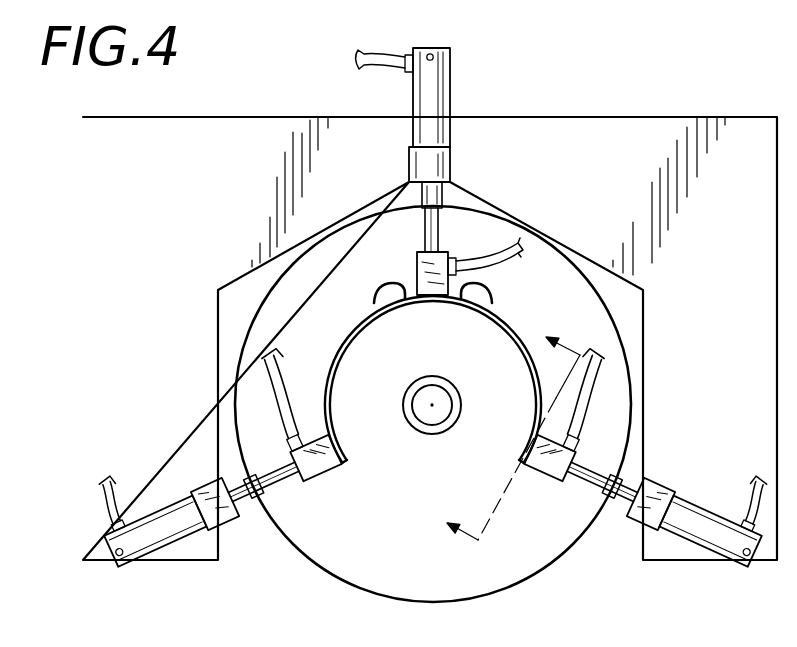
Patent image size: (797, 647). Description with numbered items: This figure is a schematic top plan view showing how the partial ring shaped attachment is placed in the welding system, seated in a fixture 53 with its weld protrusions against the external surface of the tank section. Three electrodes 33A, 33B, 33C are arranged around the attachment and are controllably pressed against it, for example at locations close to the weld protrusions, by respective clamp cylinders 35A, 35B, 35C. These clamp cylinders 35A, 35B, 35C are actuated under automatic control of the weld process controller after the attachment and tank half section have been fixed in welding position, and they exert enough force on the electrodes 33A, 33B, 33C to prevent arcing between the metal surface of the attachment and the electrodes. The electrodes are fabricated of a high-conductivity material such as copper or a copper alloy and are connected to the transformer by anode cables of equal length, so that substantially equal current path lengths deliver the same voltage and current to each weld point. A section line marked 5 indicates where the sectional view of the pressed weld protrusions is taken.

The fixture 53 is at (93, 167).
The clamp cylinder 35A is at (159, 510).
The clamp cylinder 35B is at (688, 506).
The clamp cylinder 35C is at (452, 60).
The electrode 33A is at (322, 481).
The electrode 33B is at (545, 471).
The electrode 33C is at (417, 269).
The section line 5- 5 is at (493, 423).